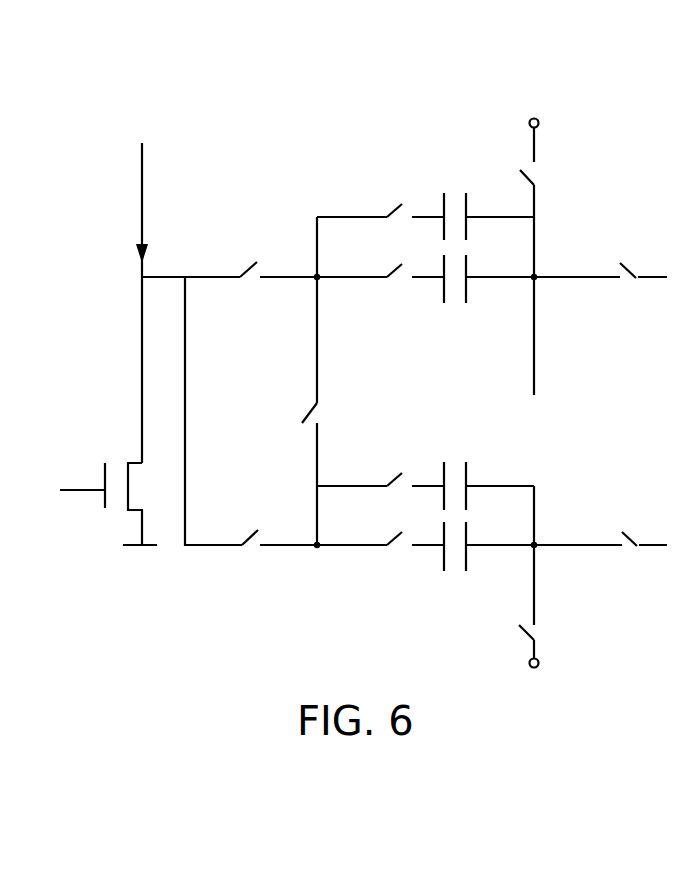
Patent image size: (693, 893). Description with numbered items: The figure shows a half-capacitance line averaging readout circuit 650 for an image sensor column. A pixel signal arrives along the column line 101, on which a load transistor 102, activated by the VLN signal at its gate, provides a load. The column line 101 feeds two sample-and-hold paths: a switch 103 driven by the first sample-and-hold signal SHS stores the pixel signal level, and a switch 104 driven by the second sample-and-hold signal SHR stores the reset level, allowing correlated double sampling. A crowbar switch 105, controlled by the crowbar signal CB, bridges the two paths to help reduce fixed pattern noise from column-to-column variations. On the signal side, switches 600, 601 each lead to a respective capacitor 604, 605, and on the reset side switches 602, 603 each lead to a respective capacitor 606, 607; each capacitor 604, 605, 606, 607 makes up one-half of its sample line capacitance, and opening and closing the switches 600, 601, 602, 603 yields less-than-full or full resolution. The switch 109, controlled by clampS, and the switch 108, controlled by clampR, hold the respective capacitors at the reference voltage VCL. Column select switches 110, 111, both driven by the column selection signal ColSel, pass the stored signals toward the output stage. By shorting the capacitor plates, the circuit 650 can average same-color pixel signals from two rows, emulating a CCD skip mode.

The readout circuit 650 is at (238, 124).
The column line 101 is at (143, 176).
The load transistor 102 is at (113, 516).
The switch 103 is at (251, 281).
The switch 104 is at (250, 531).
The crowbar switch 105 is at (302, 404).
The switch 600 is at (390, 211).
The switch 601 is at (394, 289).
The switch 602 is at (382, 482).
The switch 603 is at (393, 553).
The capacitor 604 is at (452, 187).
The capacitor 605 is at (452, 304).
The capacitor 606 is at (452, 458).
The capacitor 607 is at (452, 576).
The switch 109 is at (525, 160).
The switch 108 is at (522, 634).
The column select switch 110 is at (628, 288).
The column select switch 111 is at (628, 550).